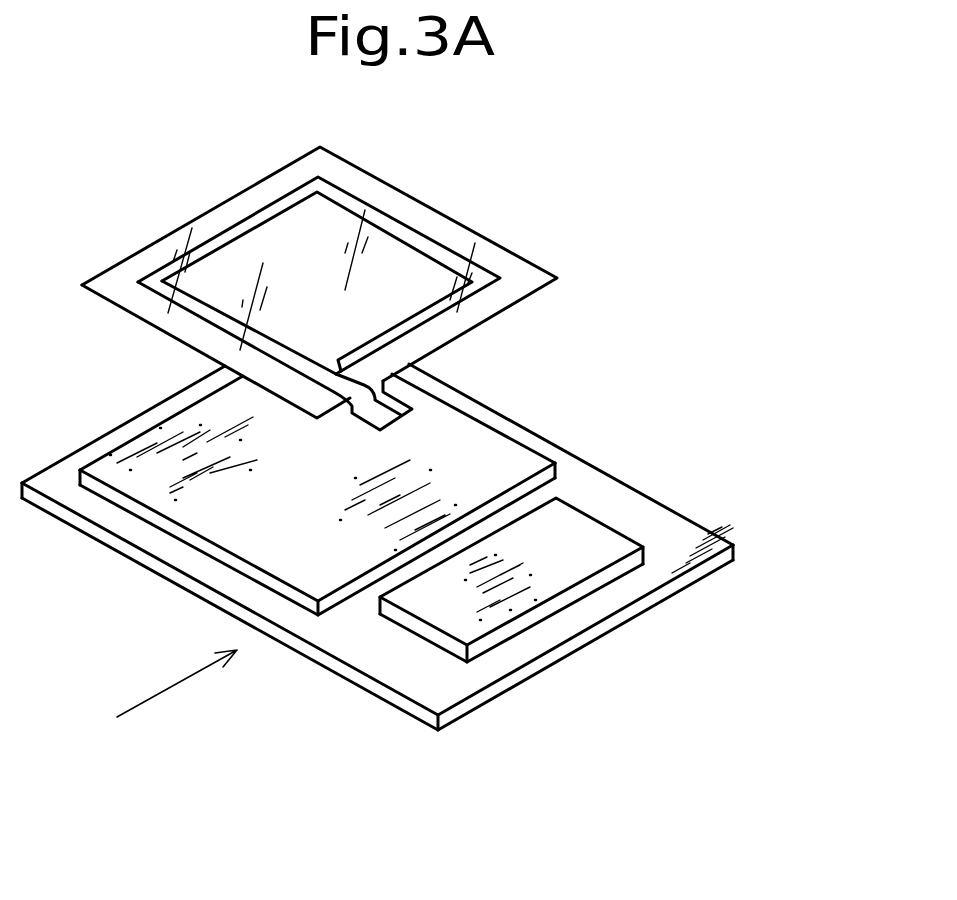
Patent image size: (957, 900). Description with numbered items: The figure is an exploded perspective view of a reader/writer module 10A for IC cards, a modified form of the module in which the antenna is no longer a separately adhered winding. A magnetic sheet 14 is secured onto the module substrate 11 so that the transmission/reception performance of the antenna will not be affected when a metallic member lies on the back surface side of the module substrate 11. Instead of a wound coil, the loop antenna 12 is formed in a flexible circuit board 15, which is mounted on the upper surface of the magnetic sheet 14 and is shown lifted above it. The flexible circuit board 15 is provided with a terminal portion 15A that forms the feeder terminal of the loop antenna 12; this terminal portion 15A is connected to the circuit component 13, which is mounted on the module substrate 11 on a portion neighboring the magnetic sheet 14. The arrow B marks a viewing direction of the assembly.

The reader/writer module for IC cards 10A is at (700, 227).
The module substrate 11 is at (668, 525).
The loop antenna 12 is at (392, 216).
The circuit component 13 is at (575, 528).
The magnetic sheet 14 is at (502, 453).
The flexible circuit board 15 is at (360, 339).
The terminal portion 15A is at (373, 419).
The viewing direction B is at (163, 700).